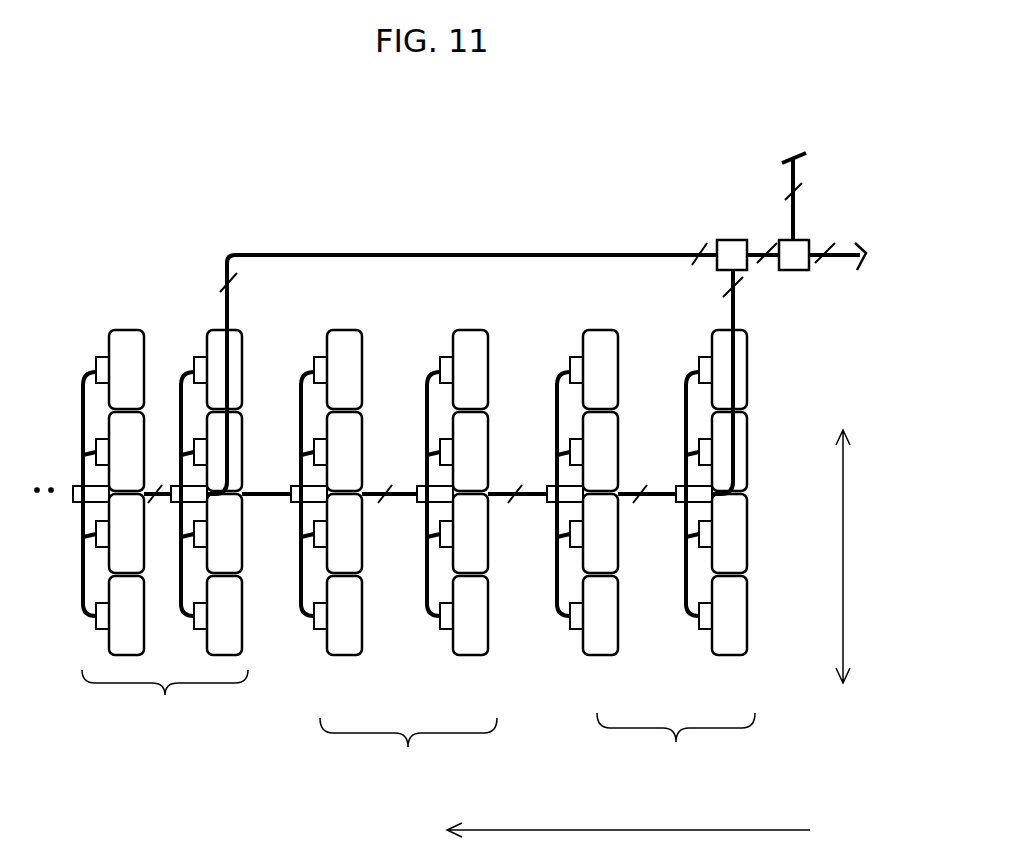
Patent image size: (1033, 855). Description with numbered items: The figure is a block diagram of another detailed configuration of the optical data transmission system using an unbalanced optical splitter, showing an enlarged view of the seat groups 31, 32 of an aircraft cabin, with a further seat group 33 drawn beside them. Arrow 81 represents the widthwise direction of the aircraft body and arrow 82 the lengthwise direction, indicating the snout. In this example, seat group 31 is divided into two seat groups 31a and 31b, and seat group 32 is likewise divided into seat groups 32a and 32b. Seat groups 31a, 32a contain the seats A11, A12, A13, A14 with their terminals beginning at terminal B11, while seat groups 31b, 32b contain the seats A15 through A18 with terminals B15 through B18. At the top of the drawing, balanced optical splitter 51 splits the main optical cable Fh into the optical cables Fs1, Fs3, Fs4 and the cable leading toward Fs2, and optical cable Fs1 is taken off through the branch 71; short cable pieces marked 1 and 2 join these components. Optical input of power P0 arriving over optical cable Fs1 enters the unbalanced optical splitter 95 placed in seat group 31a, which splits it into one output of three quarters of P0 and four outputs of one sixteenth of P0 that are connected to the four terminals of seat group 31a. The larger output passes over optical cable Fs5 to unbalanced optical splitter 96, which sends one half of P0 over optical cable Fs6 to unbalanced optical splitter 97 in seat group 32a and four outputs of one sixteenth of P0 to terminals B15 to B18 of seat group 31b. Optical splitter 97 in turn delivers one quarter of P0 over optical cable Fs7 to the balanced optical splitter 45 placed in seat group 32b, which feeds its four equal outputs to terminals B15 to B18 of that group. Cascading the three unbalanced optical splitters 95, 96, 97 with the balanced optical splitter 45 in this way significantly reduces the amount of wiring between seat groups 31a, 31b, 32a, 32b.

The cable 1 is at (475, 343).
The cable 2 is at (798, 240).
The seat group 31 is at (676, 747).
The seat group 31a is at (666, 512).
The seat group 31b is at (597, 512).
The seat group 32 is at (408, 753).
The seat group 32a is at (465, 515).
The seat group 32b is at (334, 515).
The seat group 33 is at (163, 529).
The optical splitter 45 is at (295, 507).
The balanced optical splitter 51 is at (786, 271).
The branch 71 is at (733, 240).
The arrow 81 is at (845, 607).
The arrow 82 is at (748, 828).
The optical splitter 95 is at (679, 502).
The optical splitter 96 is at (552, 508).
The optical splitter 97 is at (420, 508).
The seat A11 is at (748, 346).
The seat A12 is at (748, 436).
The seat A13 is at (748, 527).
The seat A14 is at (748, 614).
The seat A15 is at (622, 392).
The seat A18 is at (622, 617).
The terminal B11 is at (707, 357).
The terminal B15 is at (580, 355).
The terminal B18 is at (568, 628).
The optical cable Fh is at (797, 173).
The optical cable Fs1 is at (728, 302).
The power line Fs2 is at (222, 294).
The optical cable Fs3 is at (847, 258).
The power line Fs4 is at (837, 256).
The optical cable Fs5 is at (652, 495).
The optical cable Fs6 is at (530, 495).
The optical cable Fs7 is at (402, 495).